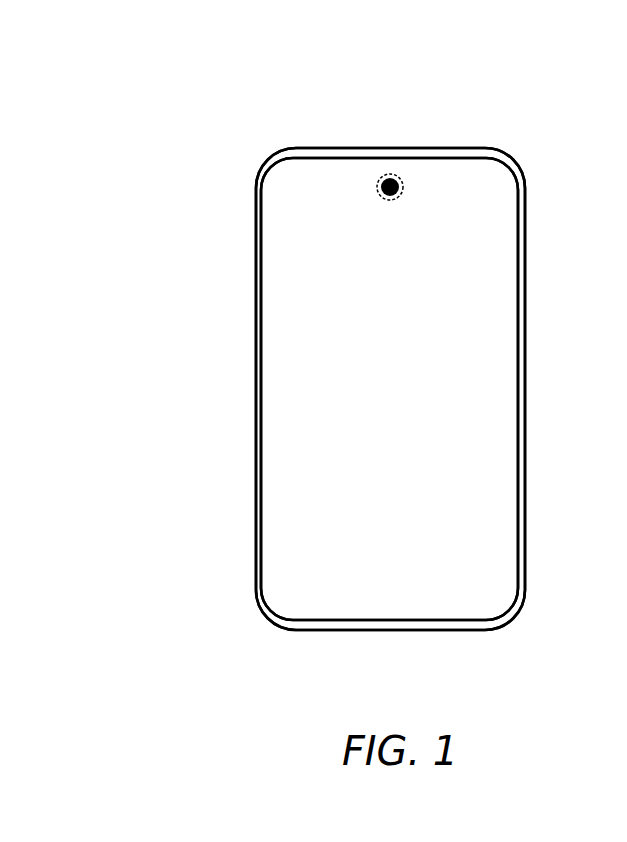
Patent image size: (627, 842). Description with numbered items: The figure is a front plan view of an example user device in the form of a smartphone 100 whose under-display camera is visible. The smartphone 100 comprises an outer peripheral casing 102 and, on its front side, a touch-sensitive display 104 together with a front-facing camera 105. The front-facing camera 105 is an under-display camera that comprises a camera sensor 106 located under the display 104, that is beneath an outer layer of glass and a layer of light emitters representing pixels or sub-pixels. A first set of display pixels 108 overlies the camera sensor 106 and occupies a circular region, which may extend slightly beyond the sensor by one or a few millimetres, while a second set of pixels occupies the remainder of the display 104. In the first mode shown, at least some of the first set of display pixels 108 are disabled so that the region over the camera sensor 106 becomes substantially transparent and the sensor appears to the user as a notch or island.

The smartphone 100 is at (200, 187).
The outer peripheral casing 102 is at (525, 342).
The touch-sensitive display 104 is at (407, 528).
The front-facing camera 105 is at (350, 162).
The camera sensor 106 is at (399, 173).
The first set of display pixels 108 is at (378, 178).